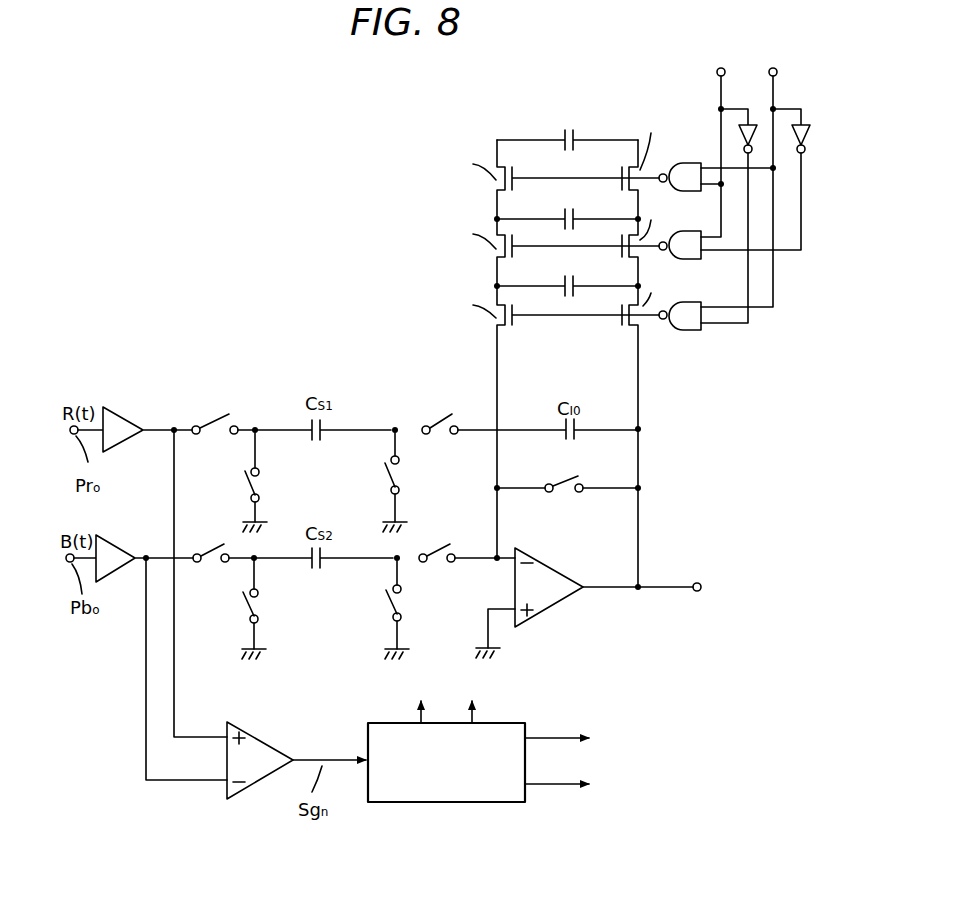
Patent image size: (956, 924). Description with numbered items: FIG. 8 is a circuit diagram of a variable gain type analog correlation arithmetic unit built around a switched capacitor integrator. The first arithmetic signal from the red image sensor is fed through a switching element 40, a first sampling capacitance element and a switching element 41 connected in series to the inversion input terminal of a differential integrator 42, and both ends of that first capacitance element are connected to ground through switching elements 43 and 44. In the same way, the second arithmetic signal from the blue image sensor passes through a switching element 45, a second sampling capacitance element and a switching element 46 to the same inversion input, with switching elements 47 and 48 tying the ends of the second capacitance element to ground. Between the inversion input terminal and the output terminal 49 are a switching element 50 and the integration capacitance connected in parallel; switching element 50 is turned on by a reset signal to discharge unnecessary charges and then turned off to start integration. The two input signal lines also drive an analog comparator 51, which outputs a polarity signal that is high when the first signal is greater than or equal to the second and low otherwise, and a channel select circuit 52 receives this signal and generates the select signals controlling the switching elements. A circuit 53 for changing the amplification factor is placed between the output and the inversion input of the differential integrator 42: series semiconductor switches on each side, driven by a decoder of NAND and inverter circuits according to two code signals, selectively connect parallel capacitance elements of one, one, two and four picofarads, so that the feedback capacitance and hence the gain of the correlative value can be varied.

The switching element 40 is at (214, 418).
The switching element 41 is at (440, 418).
The differential integrator 42 is at (548, 606).
The switching element 43 is at (259, 488).
The switching element 44 is at (399, 478).
The switching element 45 is at (215, 546).
The switching element 46 is at (439, 563).
The switching element 47 is at (244, 604).
The switching element 48 is at (389, 601).
The output terminal 49 is at (700, 581).
The switching element 50 is at (560, 481).
The analog comparator 51 is at (272, 740).
The channel select circuit 52 is at (510, 803).
The circuit for changing the amplification factor 53 is at (502, 122).